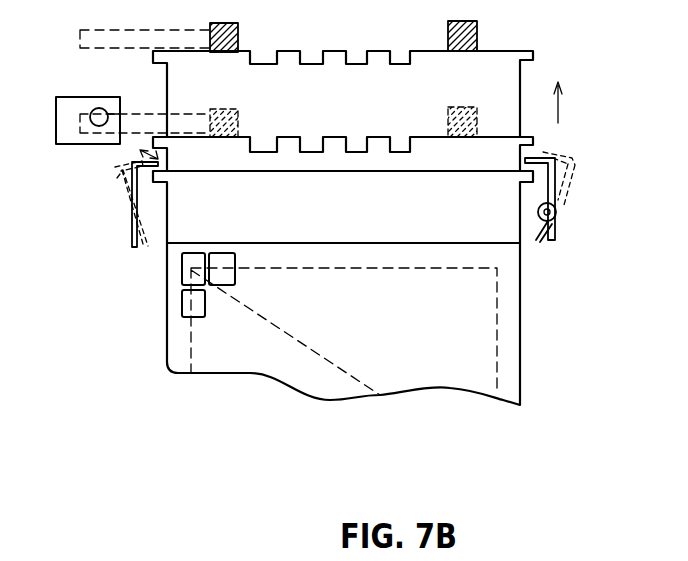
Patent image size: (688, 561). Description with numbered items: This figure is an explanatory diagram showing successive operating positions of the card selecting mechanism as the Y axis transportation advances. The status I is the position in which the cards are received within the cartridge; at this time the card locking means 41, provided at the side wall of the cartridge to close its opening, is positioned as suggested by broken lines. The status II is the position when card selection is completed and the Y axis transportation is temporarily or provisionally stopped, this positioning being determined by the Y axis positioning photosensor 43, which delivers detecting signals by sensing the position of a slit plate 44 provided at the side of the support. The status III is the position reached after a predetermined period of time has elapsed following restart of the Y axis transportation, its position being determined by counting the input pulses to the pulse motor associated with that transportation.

The card locking means 41 is at (124, 184).
The Y axis positioning photosensor 43 is at (58, 118).
The slit plate 44 is at (138, 122).
The status I is at (510, 294).
The status II is at (505, 160).
The status III is at (507, 88).